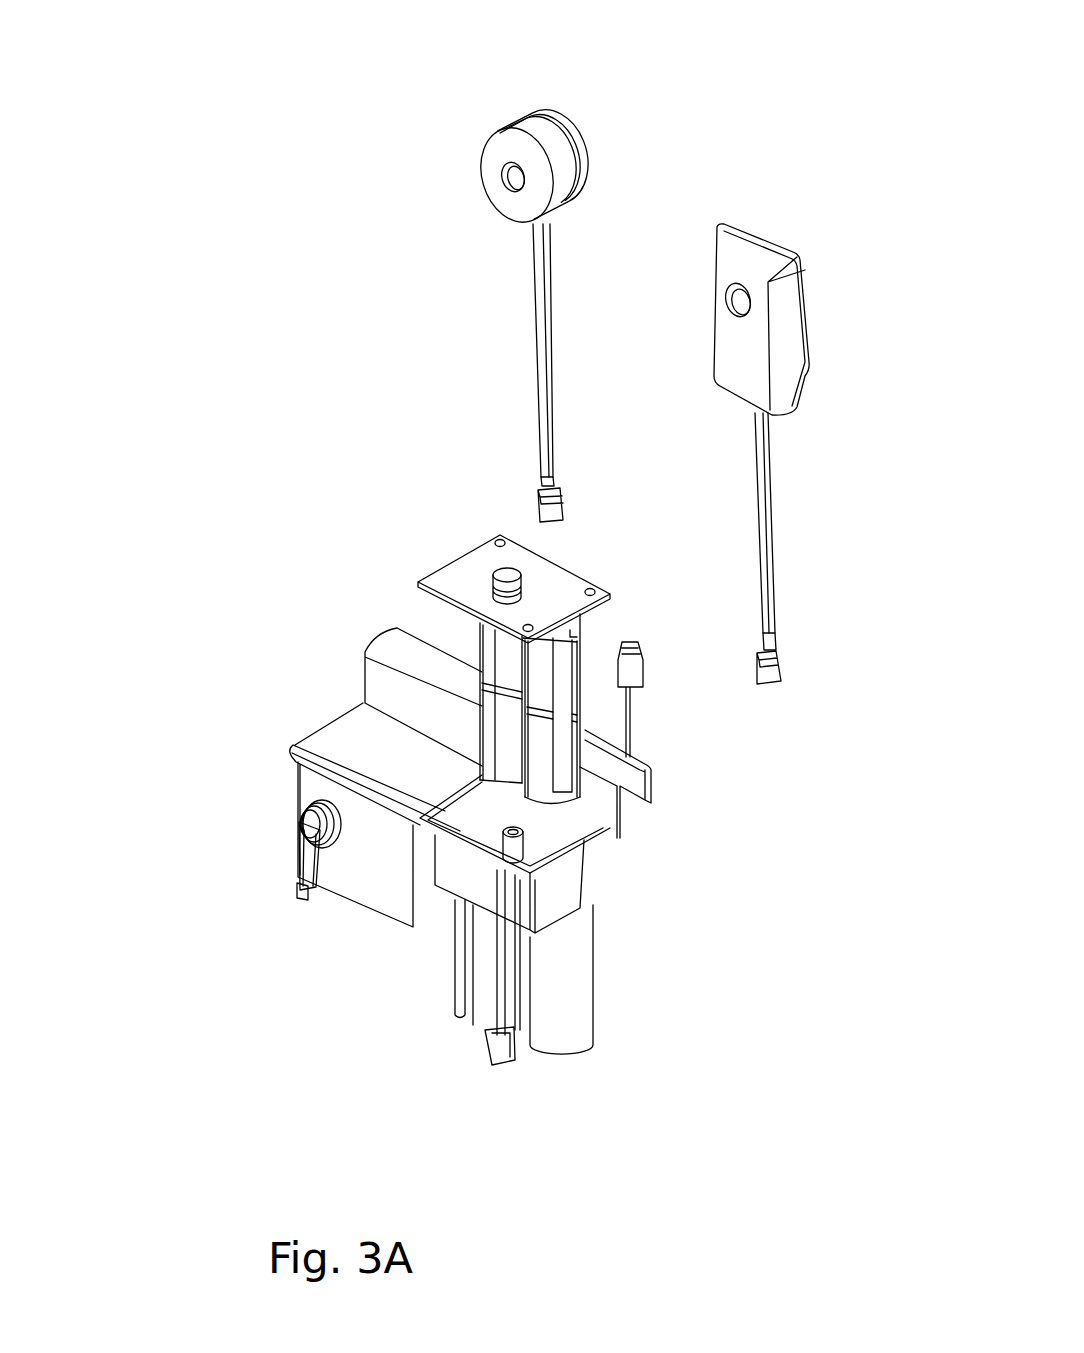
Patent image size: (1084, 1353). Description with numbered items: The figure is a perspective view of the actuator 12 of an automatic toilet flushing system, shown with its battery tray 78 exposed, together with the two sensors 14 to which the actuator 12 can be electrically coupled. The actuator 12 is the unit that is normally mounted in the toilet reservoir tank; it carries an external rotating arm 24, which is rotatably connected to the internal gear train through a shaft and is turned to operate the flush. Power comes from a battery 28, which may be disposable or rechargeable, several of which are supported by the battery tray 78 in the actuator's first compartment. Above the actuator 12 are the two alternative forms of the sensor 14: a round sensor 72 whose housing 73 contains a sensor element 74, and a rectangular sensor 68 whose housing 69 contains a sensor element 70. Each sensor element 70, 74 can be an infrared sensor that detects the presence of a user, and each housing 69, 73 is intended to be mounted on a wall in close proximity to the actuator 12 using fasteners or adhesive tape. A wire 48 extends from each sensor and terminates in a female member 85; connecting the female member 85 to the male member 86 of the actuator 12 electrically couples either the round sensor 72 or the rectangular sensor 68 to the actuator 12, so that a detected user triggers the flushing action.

The actuator 12 is at (160, 464).
The sensor 14 is at (381, 200).
The external rotating arm 24 is at (310, 858).
The battery 28 is at (620, 787).
The wire 48 is at (540, 327).
The rectangular sensor 68 is at (790, 290).
The sensor housing 69 is at (722, 298).
The sensor element 70 is at (745, 300).
The round sensor 72 is at (484, 168).
The sensor housing 73 is at (503, 145).
The sensor element 74 is at (510, 185).
The battery tray 78 is at (585, 715).
The female member 85 is at (780, 655).
The male member 86 is at (643, 660).